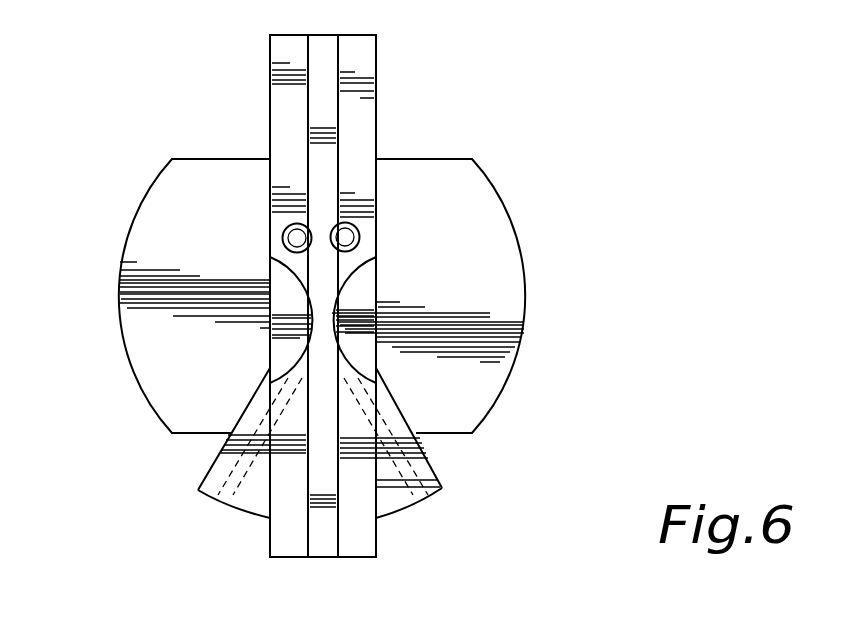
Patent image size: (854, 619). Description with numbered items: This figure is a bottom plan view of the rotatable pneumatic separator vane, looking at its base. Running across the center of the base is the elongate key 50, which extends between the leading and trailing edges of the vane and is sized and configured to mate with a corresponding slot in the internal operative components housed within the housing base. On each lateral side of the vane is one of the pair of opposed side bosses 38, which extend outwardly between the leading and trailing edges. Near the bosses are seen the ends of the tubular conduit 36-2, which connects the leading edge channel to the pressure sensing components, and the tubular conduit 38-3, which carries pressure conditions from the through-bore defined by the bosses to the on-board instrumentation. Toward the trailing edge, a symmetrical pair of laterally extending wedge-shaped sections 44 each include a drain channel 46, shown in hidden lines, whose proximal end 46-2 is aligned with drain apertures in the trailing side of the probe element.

The elongate key 50 is at (320, 108).
The side bosses 38 is at (208, 392).
The tubular conduit 38-3 is at (283, 230).
The tubular conduit 36-2 is at (350, 233).
The wedge-shaped sections 44 is at (196, 478).
The drain channels 46 is at (226, 442).
The proximal end 46-2 is at (233, 497).